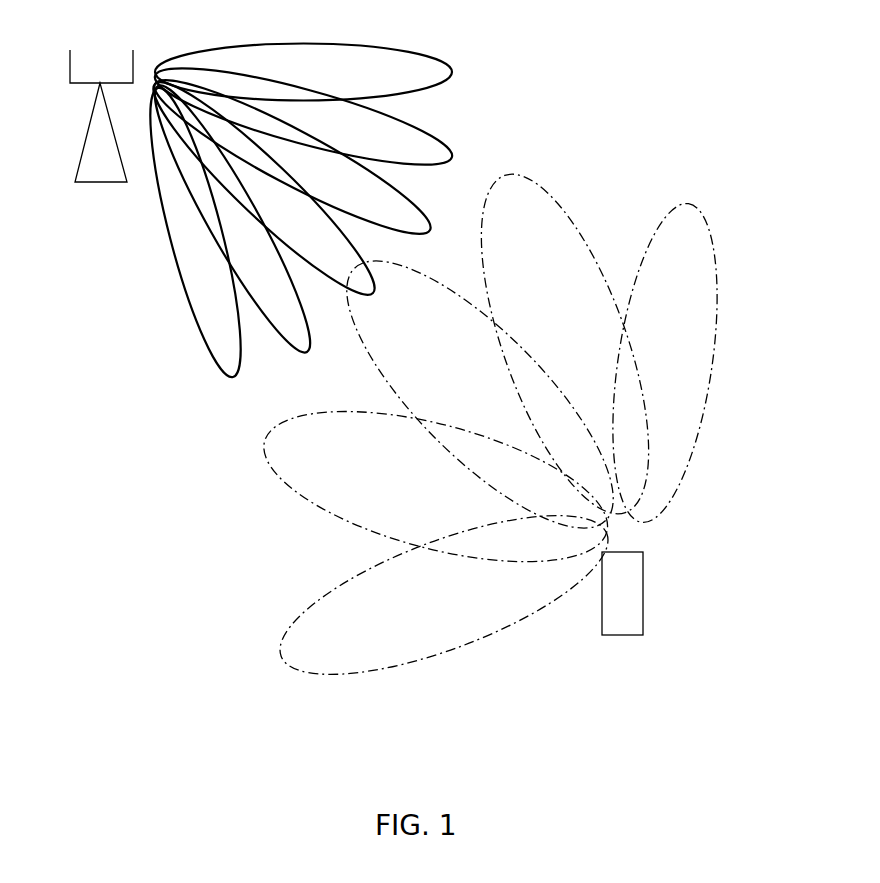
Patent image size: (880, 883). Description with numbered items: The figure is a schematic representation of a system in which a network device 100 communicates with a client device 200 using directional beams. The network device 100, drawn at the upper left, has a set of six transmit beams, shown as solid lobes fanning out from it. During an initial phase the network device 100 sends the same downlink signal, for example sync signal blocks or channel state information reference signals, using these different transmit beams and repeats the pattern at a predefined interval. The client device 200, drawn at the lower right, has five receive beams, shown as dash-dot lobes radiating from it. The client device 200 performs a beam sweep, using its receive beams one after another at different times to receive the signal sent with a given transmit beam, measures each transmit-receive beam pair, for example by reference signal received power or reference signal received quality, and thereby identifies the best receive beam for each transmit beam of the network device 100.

The network device 100 is at (75, 183).
The client device 200 is at (602, 636).